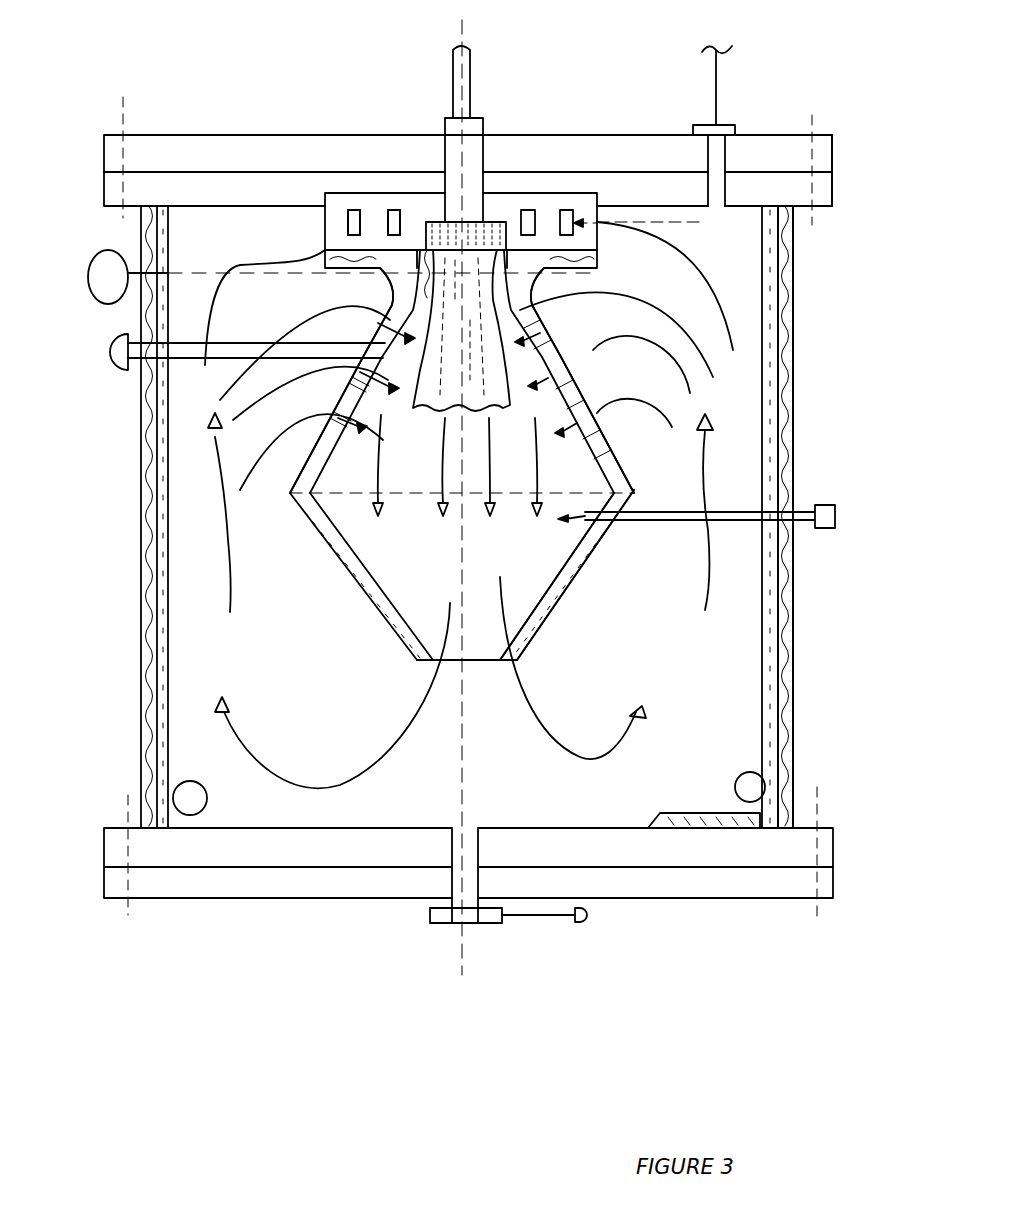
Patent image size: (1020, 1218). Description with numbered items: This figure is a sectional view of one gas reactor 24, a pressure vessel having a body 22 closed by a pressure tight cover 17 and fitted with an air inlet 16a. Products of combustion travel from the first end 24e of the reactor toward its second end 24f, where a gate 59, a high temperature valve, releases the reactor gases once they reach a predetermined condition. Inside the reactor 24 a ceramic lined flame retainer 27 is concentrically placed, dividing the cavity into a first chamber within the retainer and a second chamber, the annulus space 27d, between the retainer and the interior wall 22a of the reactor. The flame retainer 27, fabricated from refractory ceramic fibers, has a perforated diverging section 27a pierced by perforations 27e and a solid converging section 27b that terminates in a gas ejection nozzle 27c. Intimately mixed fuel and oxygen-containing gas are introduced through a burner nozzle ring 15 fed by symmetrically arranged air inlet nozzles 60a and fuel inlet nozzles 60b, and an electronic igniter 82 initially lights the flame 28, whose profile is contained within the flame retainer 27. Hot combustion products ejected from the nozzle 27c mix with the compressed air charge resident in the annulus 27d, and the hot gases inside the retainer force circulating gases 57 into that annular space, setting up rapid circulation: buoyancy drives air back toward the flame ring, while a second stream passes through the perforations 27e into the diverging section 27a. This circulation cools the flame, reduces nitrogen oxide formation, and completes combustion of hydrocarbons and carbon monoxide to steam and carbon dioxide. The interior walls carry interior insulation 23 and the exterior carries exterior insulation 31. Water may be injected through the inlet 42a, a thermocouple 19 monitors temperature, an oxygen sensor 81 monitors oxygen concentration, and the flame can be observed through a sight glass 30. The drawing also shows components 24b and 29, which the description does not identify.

The burner nozzle ring 15 is at (598, 238).
The air inlet 16a is at (720, 125).
The pressure tight cover 17 is at (833, 161).
The thermocouple 19 is at (208, 800).
The body 22 is at (777, 372).
The interior wall 22a is at (762, 622).
The interior insulation 23 is at (168, 222).
The gas reactor 24 is at (100, 608).
The inlet block 24b is at (472, 117).
The first end 24e is at (281, 132).
The second end 24f is at (262, 900).
The flame retainer 27 is at (598, 567).
The diverging section 27a is at (576, 390).
The solid converging section 27b is at (546, 628).
The nozzle 27c is at (420, 662).
The annulus space 27d is at (722, 496).
The perforations 27e is at (340, 430).
The flame 28 is at (447, 415).
The feed tube 29 is at (473, 63).
The sight glass 30 is at (97, 365).
The exterior insulation 31 is at (850, 632).
The water inlet 42a is at (836, 505).
The circulating gases 57 is at (635, 738).
The gate 59 is at (438, 917).
The air inlet nozzles 60a is at (340, 228).
The fuel inlet nozzles 60b is at (480, 238).
The oxygen sensor 81 is at (751, 770).
The electronic igniter 82 is at (106, 303).